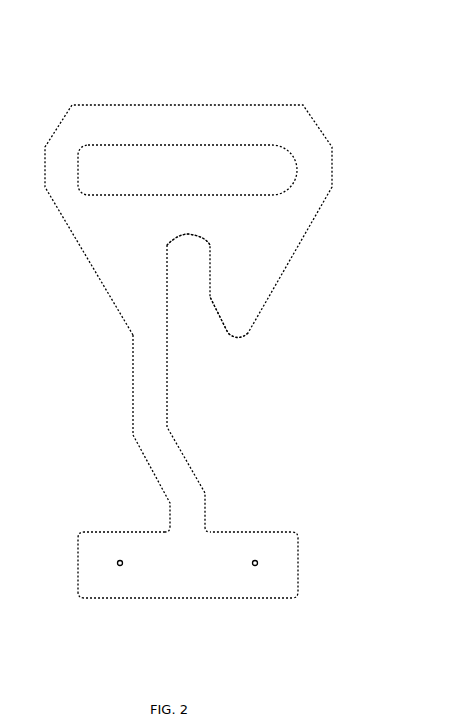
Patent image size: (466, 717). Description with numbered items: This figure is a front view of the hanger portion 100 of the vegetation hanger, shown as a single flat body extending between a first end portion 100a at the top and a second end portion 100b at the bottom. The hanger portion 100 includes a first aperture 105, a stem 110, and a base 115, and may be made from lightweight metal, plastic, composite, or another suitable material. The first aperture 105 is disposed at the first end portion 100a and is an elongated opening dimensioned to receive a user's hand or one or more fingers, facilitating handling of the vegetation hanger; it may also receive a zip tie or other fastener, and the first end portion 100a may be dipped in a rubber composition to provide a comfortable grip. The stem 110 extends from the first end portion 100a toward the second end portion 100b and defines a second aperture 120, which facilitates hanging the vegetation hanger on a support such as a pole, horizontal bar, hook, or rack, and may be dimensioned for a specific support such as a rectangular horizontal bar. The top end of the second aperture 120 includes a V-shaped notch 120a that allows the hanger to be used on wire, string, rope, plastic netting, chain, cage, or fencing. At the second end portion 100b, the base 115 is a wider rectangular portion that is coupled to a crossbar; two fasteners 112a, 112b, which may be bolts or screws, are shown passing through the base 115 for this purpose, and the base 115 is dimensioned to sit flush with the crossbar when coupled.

The hanger portion 100 is at (374, 161).
The first end portion 100a is at (258, 74).
The second end portion 100b is at (296, 628).
The first aperture 105 is at (88, 167).
The stem 110 is at (143, 433).
The base 115 is at (230, 540).
The fastener 112a is at (119, 566).
The fastener 112b is at (254, 566).
The second aperture 120 is at (197, 288).
The V-shaped notch 120a is at (185, 237).